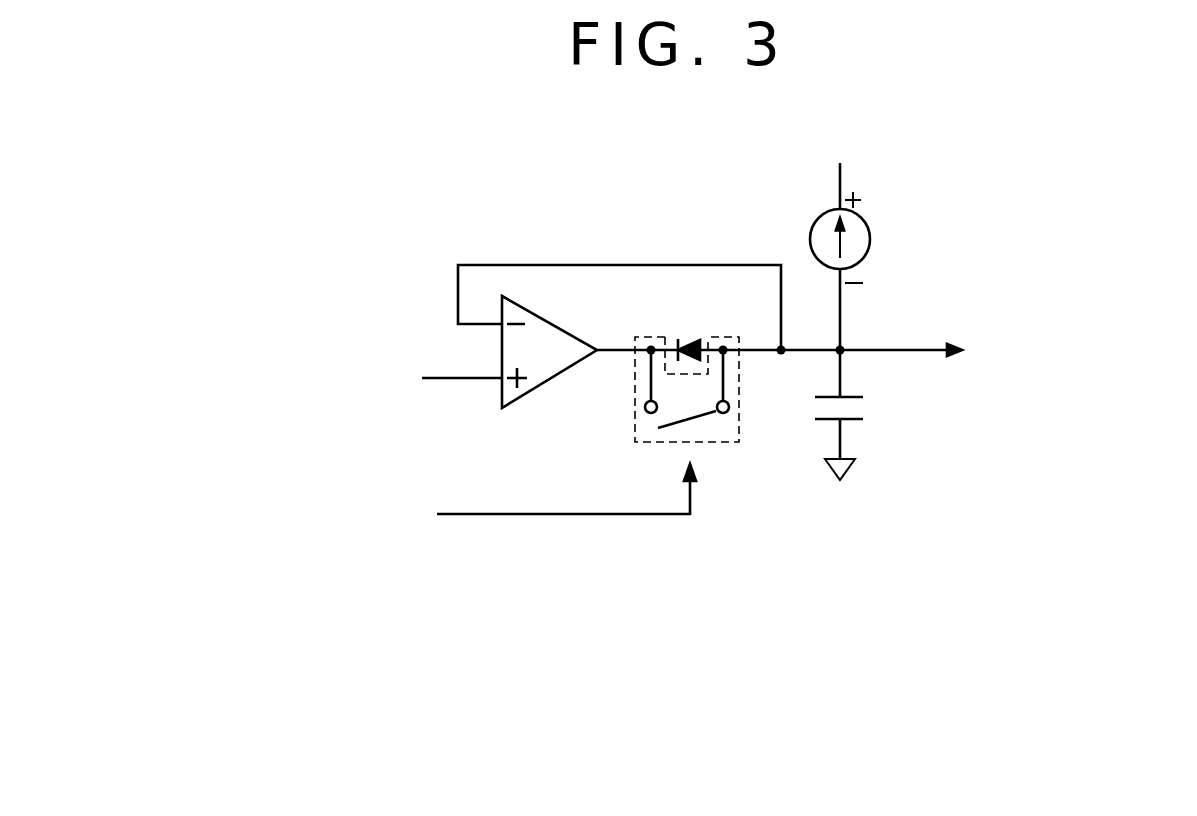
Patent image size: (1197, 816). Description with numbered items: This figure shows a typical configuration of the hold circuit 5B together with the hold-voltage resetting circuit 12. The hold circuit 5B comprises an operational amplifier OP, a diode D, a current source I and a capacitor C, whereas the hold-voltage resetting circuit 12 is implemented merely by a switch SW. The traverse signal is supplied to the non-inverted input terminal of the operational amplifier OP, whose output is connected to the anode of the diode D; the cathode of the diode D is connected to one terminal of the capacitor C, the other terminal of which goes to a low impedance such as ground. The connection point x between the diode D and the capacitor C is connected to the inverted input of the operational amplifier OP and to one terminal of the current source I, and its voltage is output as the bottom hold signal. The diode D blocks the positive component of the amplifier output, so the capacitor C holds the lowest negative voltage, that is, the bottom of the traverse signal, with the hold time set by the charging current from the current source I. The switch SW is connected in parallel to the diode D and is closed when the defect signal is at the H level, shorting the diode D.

The hold circuit 5B is at (717, 613).
The hold-voltage resetting circuit 12 is at (665, 410).
The operational amplifier OP is at (549, 352).
The diode D is at (689, 331).
The switch SW is at (710, 414).
The current source I is at (870, 237).
The capacitor C is at (852, 415).